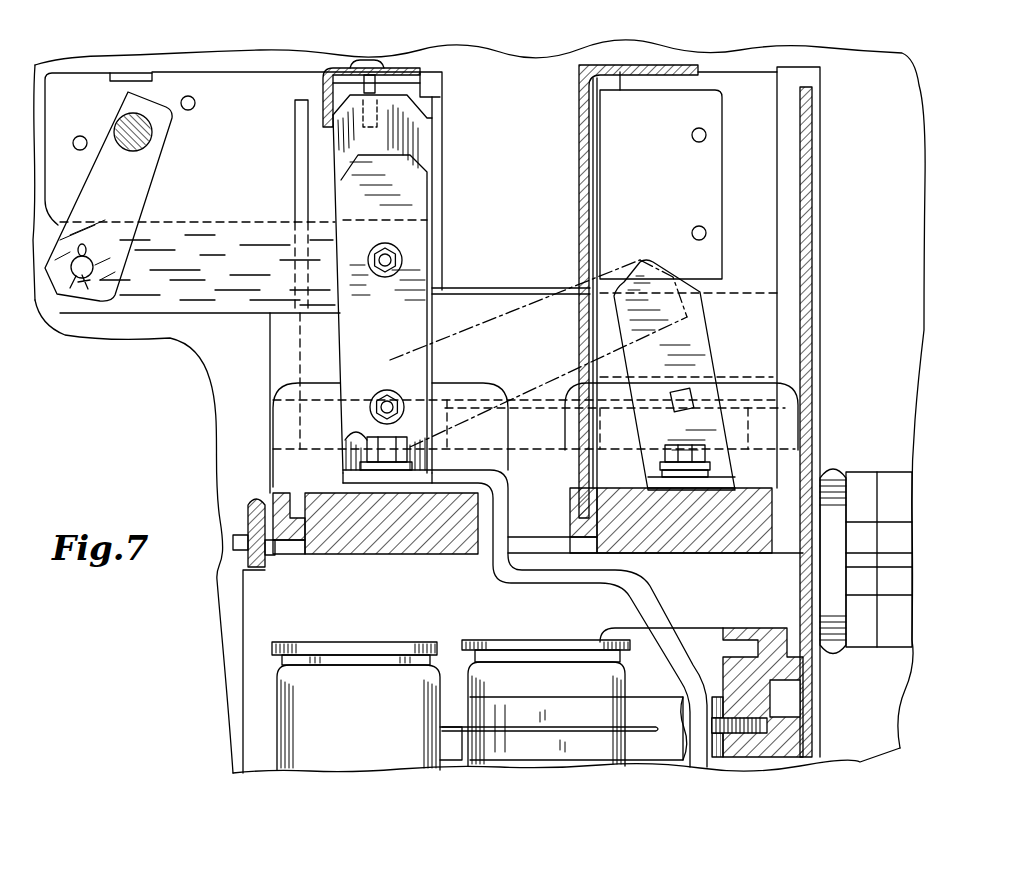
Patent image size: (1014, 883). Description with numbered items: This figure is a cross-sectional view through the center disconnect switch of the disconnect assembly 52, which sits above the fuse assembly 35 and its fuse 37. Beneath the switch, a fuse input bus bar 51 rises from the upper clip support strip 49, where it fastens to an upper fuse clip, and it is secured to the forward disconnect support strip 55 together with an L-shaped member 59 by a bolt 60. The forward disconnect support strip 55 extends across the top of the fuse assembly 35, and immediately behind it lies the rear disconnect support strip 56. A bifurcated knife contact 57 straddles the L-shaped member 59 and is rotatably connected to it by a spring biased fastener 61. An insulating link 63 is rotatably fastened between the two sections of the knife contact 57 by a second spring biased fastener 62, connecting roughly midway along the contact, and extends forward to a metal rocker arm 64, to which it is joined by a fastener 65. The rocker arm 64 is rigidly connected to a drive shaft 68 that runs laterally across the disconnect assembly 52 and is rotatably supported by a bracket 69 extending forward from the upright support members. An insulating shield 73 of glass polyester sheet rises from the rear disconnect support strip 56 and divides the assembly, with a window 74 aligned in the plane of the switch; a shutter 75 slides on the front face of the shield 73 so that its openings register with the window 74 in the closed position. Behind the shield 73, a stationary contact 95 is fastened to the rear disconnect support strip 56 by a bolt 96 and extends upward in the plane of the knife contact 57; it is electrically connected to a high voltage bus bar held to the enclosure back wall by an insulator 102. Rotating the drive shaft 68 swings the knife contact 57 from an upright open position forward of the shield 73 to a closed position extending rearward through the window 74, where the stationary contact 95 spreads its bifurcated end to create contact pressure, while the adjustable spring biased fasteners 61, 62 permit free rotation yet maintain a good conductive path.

The fuse assembly 35 is at (262, 668).
The fuse 37 is at (369, 709).
The upper clip support strip 49 is at (761, 627).
The fuse input bus bar 51 is at (527, 582).
The disconnect assembly 52 is at (275, 93).
The forward disconnect support strip 55 is at (374, 552).
The rear disconnect support strip 56 is at (718, 553).
The knife contact 57 is at (397, 334).
The L-shaped member 59 is at (360, 376).
The bolt 60 is at (347, 431).
The spring biased fastener 61 is at (399, 403).
The second spring biased fastener 62 is at (403, 258).
The link 63 is at (232, 271).
The rocker arm 64 is at (124, 199).
The fastener 65 is at (98, 290).
The drive shaft 68 is at (133, 116).
The bracket 69 is at (262, 172).
The insulating shield 73 is at (596, 122).
The window 74 is at (590, 150).
The shutter 75 is at (579, 197).
The stationary contact 95 is at (712, 353).
The bolt 96 is at (712, 452).
The insulator 102 is at (853, 470).